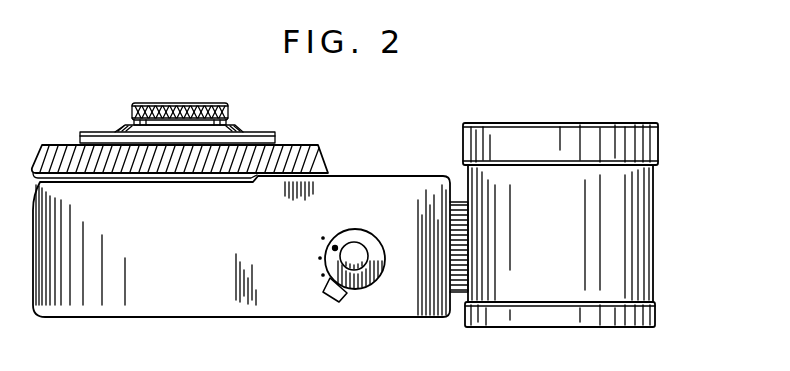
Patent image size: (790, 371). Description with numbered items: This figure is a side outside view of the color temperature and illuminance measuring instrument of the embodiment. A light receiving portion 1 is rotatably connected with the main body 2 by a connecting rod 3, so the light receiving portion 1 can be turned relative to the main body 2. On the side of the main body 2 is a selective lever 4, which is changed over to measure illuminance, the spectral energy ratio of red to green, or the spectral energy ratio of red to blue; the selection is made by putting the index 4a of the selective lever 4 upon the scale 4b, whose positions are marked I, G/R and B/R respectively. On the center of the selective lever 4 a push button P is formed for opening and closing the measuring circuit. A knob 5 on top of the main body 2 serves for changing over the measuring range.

The light receiving portion 1 is at (640, 226).
The main body 2 is at (183, 302).
The connecting rod 3 is at (460, 294).
The selective lever 4 is at (368, 283).
The index 4a is at (335, 246).
The scale 4b is at (295, 263).
The knob 5 is at (207, 130).
The push button P is at (366, 258).